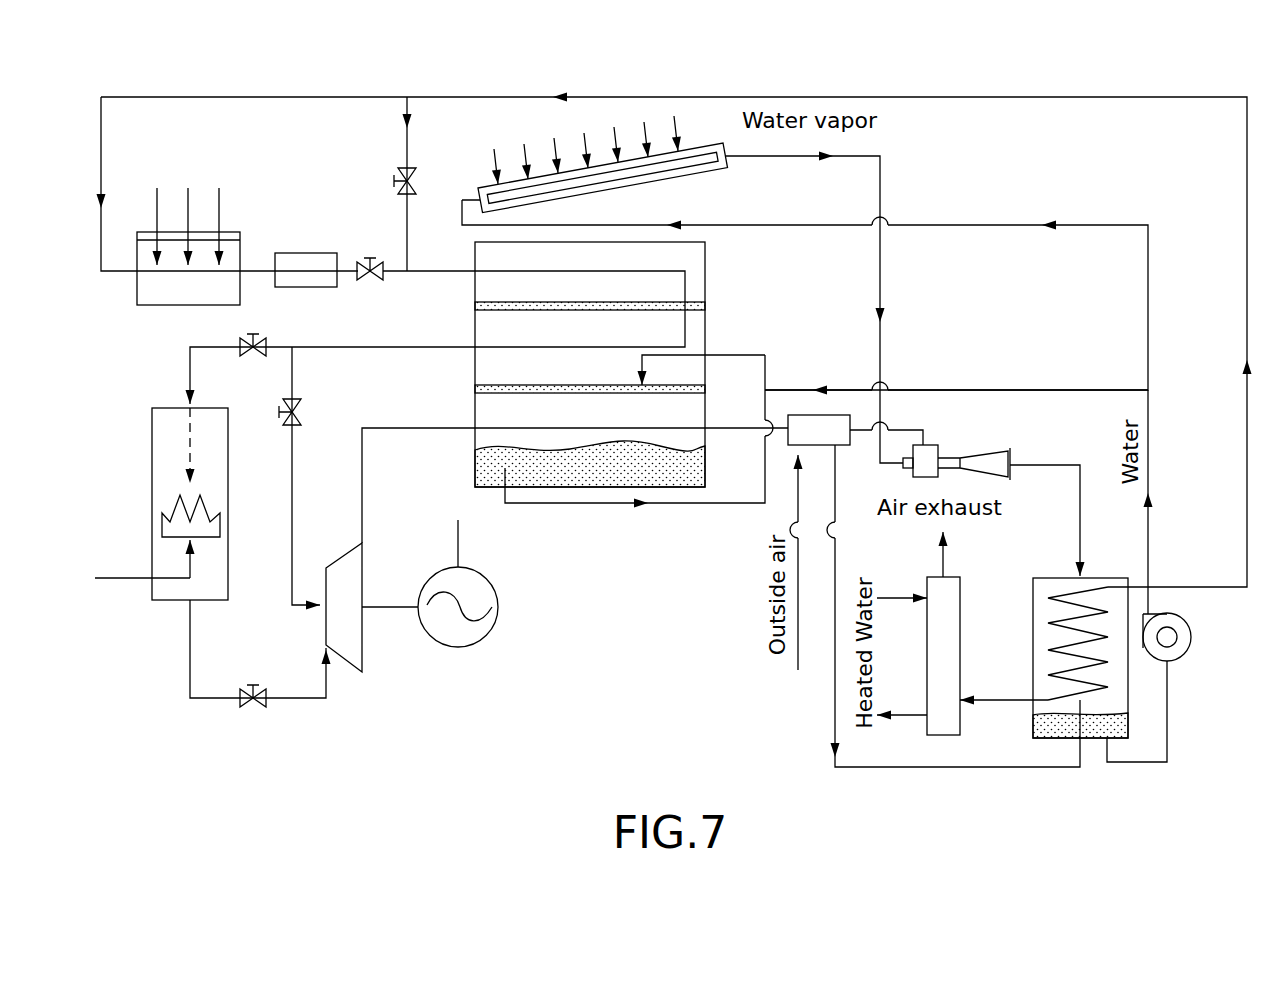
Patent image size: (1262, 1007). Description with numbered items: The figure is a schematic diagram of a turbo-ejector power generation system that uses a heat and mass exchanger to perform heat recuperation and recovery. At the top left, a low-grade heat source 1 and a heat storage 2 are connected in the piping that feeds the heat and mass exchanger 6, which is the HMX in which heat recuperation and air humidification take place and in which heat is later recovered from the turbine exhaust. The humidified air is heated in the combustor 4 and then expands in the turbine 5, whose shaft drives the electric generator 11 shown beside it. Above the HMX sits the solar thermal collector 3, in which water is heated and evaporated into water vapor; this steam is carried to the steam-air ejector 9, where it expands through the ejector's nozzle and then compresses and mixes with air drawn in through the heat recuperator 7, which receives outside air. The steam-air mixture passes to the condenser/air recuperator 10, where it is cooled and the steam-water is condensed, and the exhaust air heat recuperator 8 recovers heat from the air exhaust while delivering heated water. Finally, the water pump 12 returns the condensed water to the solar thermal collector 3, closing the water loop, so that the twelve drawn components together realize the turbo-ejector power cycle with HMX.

The low-grade heat source 1 is at (142, 232).
The heat storage 2 is at (308, 253).
The solar thermal collector 3 is at (640, 153).
The combustor 4 is at (152, 448).
The turbine 5 is at (343, 553).
The HMX (Heat and Mass Exchanger) 6 is at (707, 327).
The heat recuperator 7 is at (853, 415).
The exhaust air heat recuperator 8 is at (960, 592).
The steam-air ejector 9 is at (938, 445).
The condenser/air recuperator 10 is at (1112, 578).
The electric generator 11 is at (495, 582).
The water pump 12 is at (1170, 612).